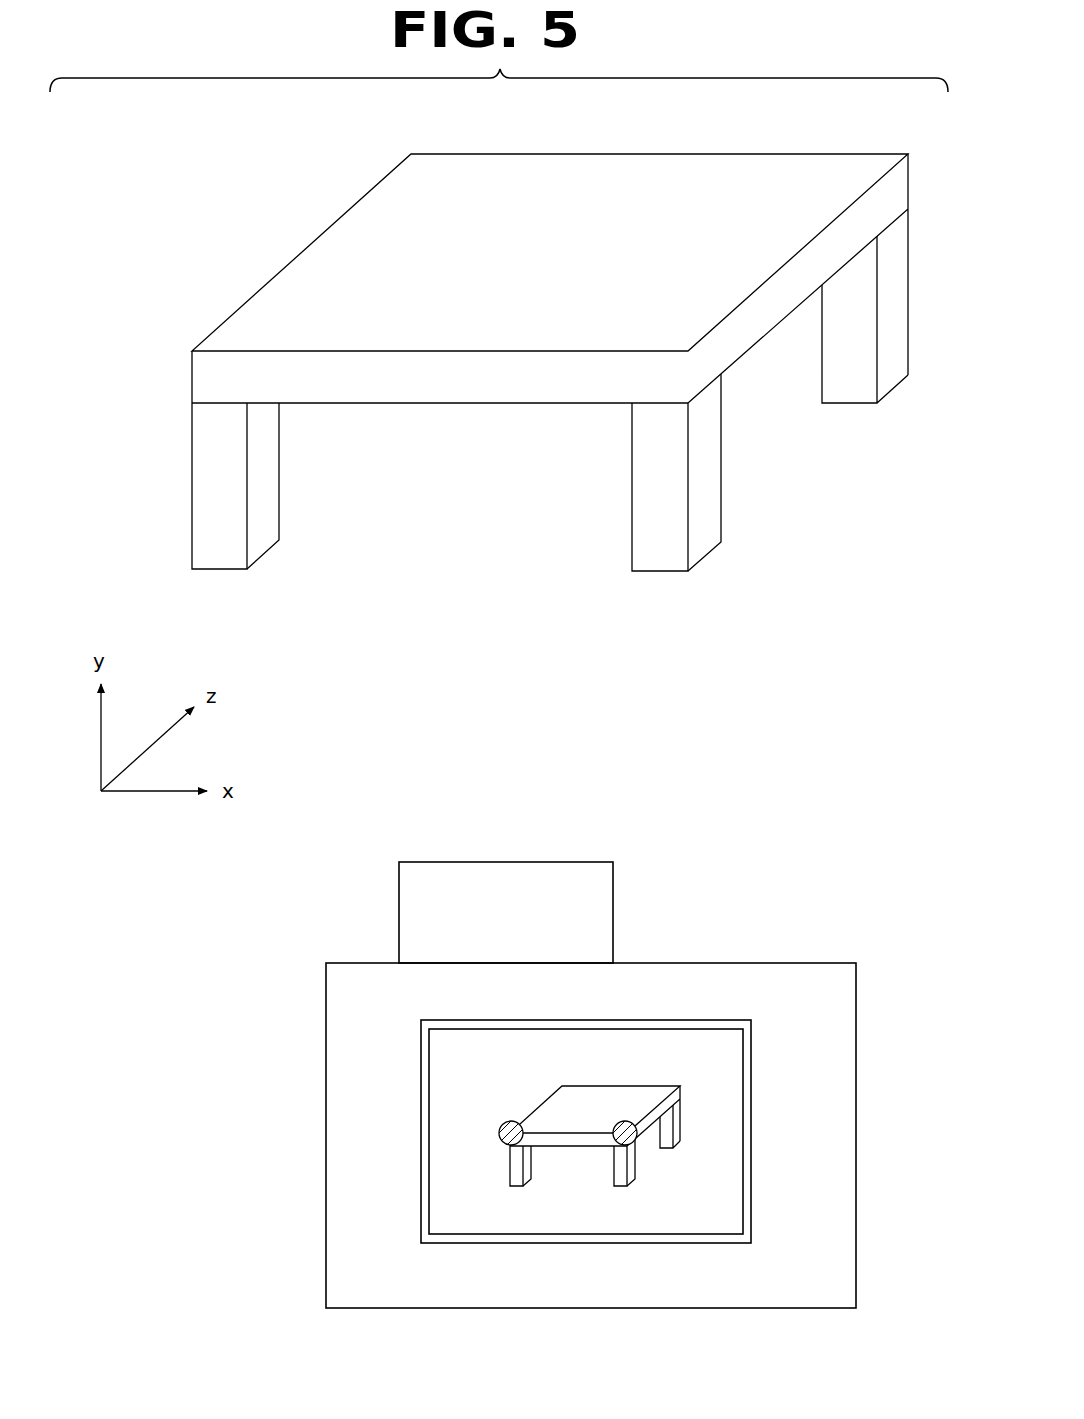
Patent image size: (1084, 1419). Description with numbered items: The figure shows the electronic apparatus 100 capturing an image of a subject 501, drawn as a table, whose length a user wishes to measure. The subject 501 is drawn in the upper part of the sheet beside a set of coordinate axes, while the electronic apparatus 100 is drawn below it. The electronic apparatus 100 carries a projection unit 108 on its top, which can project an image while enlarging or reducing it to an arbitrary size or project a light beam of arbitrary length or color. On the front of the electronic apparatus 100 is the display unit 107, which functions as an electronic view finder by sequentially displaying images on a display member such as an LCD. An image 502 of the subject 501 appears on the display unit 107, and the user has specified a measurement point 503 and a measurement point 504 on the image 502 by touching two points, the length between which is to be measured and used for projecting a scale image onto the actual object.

The subject 501 is at (808, 153).
The electronic apparatus 100 is at (856, 985).
The projection unit 108 is at (560, 862).
The display unit 107 is at (751, 1040).
The image 502 is at (728, 1188).
The measurement point 503 is at (506, 1121).
The measurement point 504 is at (628, 1121).